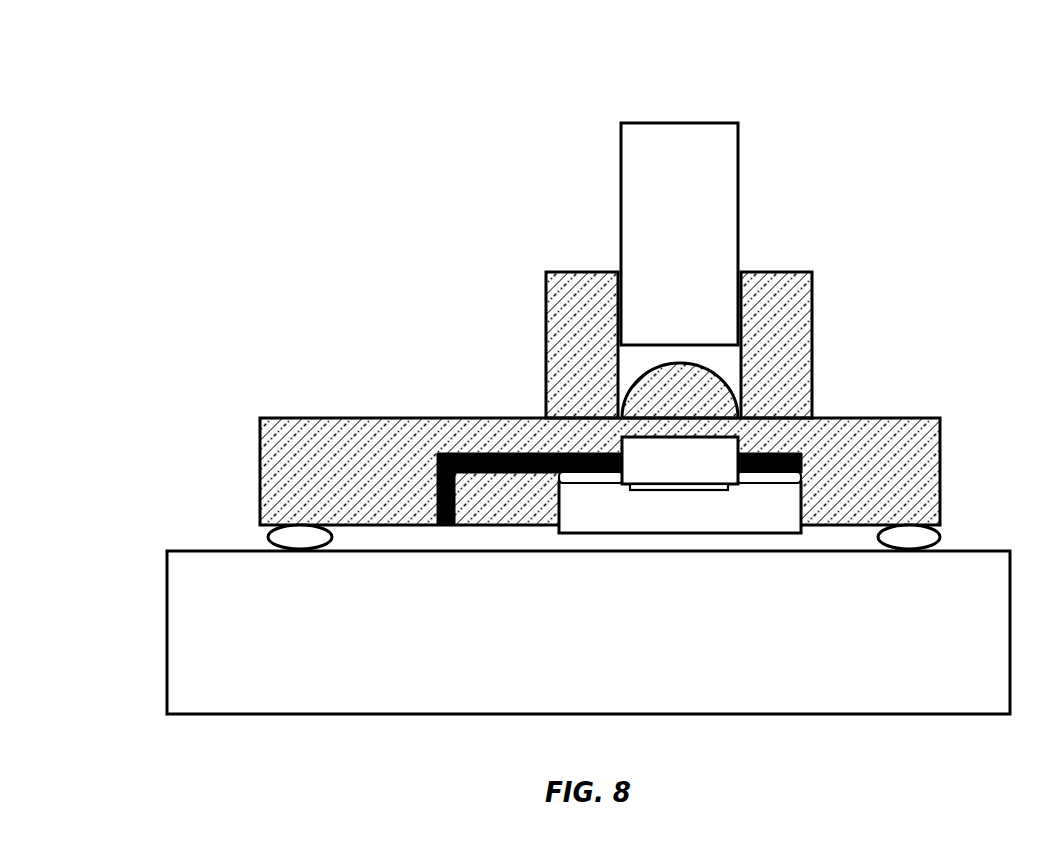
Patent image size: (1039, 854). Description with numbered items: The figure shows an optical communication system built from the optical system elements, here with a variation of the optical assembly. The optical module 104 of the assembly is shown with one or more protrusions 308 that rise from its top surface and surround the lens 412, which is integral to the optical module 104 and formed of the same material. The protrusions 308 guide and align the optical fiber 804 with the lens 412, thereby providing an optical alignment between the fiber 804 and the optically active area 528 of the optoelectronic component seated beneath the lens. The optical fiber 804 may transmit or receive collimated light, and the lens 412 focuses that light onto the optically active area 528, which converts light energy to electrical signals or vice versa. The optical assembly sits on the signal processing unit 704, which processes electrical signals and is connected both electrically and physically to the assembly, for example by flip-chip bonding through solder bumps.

The optical module 104 is at (547, 483).
The protrusions 308 is at (677, 345).
The lens 412 is at (773, 368).
The active area 528 is at (745, 540).
The signal processing unit 704 is at (535, 632).
The optical fiber 804 is at (631, 234).